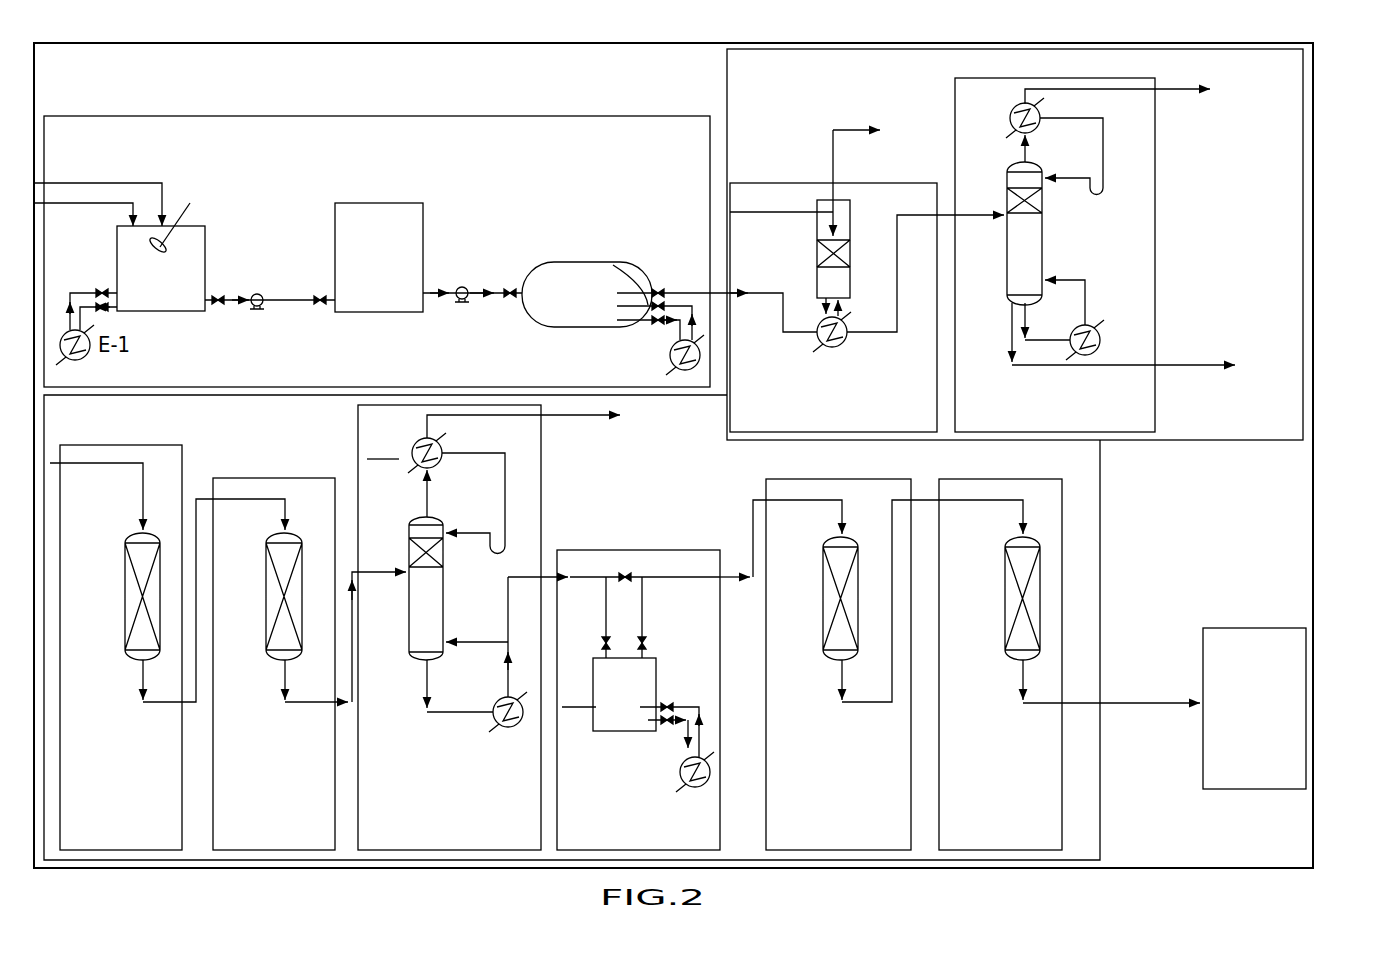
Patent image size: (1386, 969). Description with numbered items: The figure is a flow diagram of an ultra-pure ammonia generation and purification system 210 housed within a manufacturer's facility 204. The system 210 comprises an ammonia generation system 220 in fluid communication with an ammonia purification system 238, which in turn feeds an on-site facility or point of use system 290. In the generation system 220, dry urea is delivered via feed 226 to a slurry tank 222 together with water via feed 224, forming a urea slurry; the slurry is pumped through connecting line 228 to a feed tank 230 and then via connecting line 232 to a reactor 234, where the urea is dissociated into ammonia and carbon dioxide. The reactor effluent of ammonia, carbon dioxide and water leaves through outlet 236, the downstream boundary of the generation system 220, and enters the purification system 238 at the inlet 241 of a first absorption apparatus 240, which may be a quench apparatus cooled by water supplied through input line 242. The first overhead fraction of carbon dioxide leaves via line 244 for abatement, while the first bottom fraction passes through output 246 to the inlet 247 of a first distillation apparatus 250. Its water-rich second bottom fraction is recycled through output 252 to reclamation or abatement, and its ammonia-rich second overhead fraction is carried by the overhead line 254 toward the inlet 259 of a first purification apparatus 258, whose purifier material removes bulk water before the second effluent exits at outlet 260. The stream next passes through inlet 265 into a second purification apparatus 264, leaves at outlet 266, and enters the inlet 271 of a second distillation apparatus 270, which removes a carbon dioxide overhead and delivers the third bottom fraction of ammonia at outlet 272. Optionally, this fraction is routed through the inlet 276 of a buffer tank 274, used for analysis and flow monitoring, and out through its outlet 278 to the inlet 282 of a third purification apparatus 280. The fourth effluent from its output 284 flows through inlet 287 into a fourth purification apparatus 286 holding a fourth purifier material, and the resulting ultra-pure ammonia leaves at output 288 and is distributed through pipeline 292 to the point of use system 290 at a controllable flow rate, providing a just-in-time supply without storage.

The facility 204 is at (132, 43).
The ultra-pure ammonia generation and purification system 210 is at (110, 102).
The ammonia generation system 220 is at (165, 116).
The slurry tank 222 is at (205, 237).
The water feed 224 is at (108, 213).
The urea feed 226 is at (168, 197).
The connecting line 228 is at (262, 292).
The feed tank 230 is at (372, 203).
The connecting line 232 is at (437, 290).
The reactor 234 is at (572, 262).
The outlet 236 is at (677, 288).
The ammonia purification system 238 is at (1313, 168).
The first absorption apparatus 240 is at (793, 432).
The inlet 241 is at (808, 342).
The input line 242 is at (822, 200).
The line 244 is at (836, 146).
The output 246 is at (945, 213).
The inlet 247 is at (1004, 207).
The first distillation apparatus 250 is at (1110, 78).
The output 252 is at (1208, 362).
The overhead outlet line to V-5 254 is at (1172, 94).
The first purification apparatus 258 is at (116, 445).
The inlet 259 is at (137, 536).
The outlet 260 is at (192, 708).
The second purification apparatus 264 is at (243, 478).
The inlet 265 is at (281, 536).
The outlet 266 is at (340, 702).
The second distillation apparatus 270 is at (545, 470).
The inlet 271 is at (403, 571).
The outlet 272 is at (545, 575).
The buffer tank 274 is at (608, 550).
The inlet 276 is at (560, 582).
The outlet 278 is at (724, 575).
The third purification apparatus 280 is at (818, 479).
The inlet 282 is at (838, 536).
The output 284 is at (914, 500).
The fourth purification apparatus 286 is at (1000, 479).
The inlet 287 is at (1018, 536).
The output 288 is at (1075, 701).
The on-site facility system 290 is at (1262, 628).
The inlet 292 is at (1198, 702).